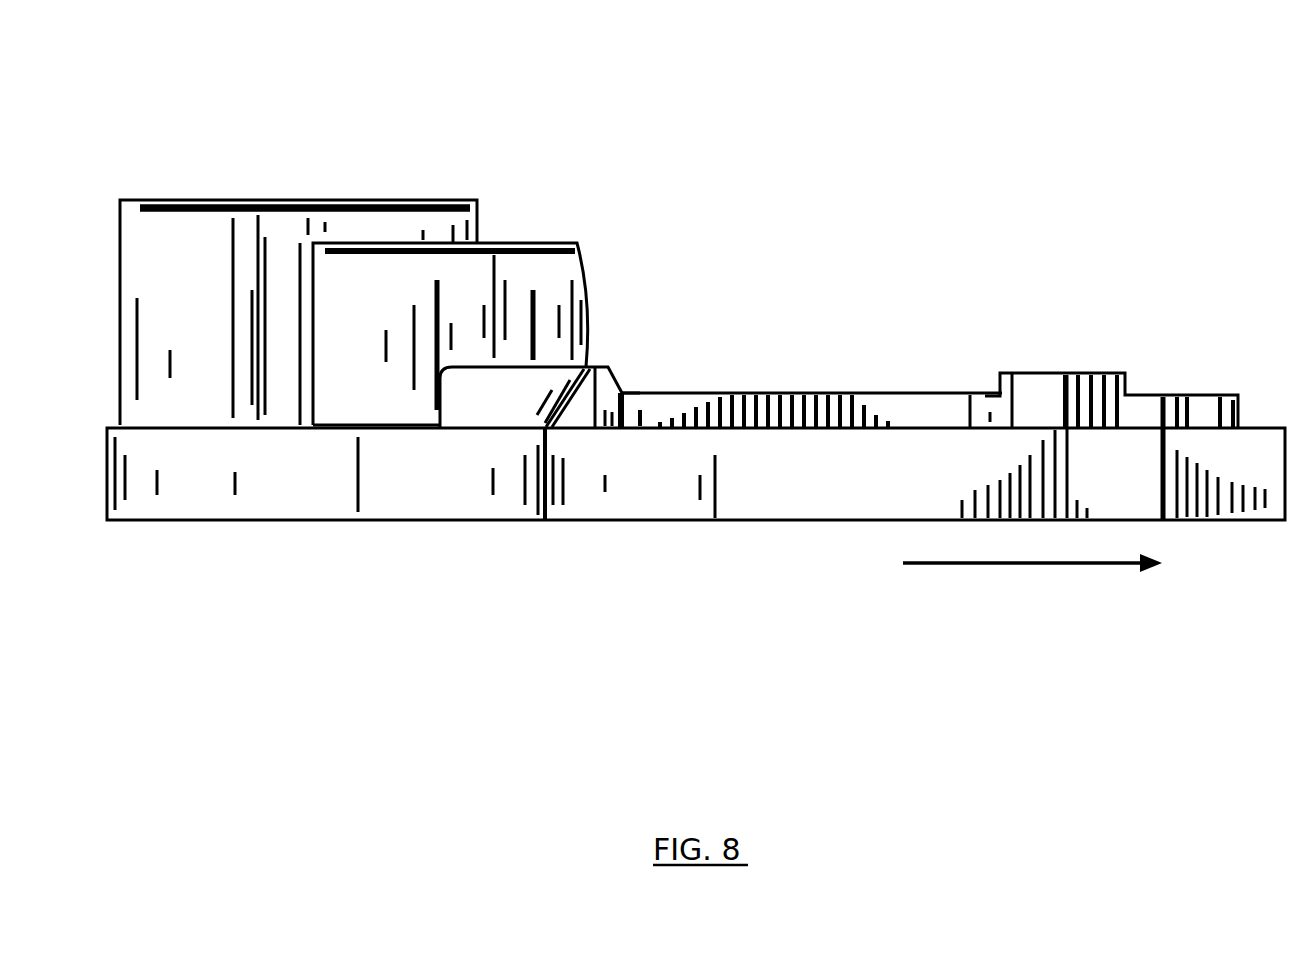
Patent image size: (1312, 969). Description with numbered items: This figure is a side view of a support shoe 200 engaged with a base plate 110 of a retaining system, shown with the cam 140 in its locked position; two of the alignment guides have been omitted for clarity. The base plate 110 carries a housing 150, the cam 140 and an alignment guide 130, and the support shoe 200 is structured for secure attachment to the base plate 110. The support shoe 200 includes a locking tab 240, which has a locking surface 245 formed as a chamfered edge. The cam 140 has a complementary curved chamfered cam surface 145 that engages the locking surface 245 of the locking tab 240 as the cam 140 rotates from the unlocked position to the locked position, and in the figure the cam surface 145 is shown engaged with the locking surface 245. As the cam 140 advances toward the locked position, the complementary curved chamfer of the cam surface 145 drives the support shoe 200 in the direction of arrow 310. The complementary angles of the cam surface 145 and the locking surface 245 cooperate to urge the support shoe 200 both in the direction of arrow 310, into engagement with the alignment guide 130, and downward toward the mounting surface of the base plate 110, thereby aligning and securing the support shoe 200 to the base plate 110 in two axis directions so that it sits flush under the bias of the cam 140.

The base plate 110 is at (843, 507).
The alignment guide 130 is at (1028, 390).
The cam 140 is at (553, 270).
The cam surface 145 is at (505, 400).
The housing 150 is at (195, 235).
The support shoe 200 is at (893, 410).
The locking tab 240 is at (605, 368).
The locking surface 245 is at (577, 393).
The arrow 310 is at (1032, 582).